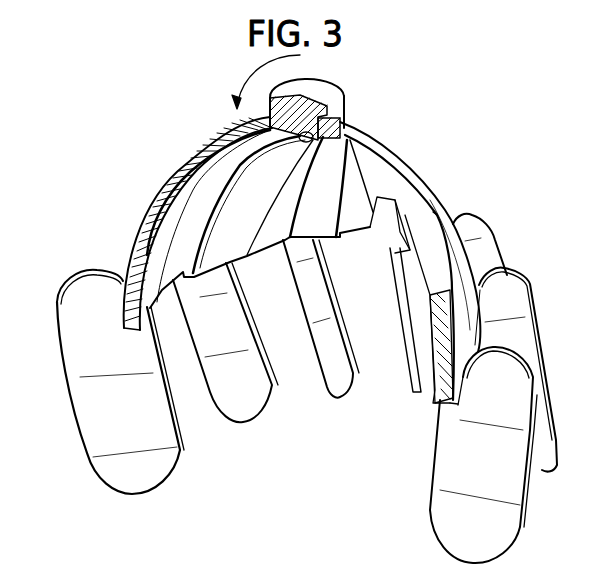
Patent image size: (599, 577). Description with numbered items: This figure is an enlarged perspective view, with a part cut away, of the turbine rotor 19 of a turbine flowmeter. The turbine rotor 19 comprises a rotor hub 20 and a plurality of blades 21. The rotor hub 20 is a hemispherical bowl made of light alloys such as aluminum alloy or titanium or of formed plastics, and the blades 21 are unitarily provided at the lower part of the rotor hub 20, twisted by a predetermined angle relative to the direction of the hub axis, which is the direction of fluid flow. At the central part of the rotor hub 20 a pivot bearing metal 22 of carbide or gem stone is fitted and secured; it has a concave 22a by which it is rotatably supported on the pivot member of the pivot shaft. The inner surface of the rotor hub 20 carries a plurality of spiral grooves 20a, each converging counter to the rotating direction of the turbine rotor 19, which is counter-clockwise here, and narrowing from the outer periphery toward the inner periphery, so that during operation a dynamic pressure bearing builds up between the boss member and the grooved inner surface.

The turbine rotor 19 is at (462, 146).
The rotor hub 20 is at (448, 207).
The spiral grooves 20a is at (197, 226).
The blades 21 is at (75, 293).
The pivot bearing metal 22 is at (310, 92).
The concave 22a is at (340, 141).